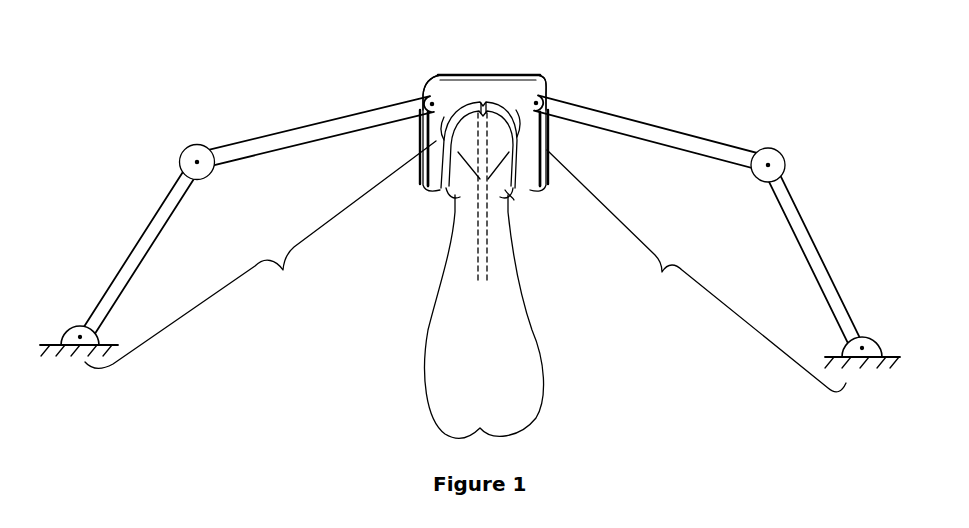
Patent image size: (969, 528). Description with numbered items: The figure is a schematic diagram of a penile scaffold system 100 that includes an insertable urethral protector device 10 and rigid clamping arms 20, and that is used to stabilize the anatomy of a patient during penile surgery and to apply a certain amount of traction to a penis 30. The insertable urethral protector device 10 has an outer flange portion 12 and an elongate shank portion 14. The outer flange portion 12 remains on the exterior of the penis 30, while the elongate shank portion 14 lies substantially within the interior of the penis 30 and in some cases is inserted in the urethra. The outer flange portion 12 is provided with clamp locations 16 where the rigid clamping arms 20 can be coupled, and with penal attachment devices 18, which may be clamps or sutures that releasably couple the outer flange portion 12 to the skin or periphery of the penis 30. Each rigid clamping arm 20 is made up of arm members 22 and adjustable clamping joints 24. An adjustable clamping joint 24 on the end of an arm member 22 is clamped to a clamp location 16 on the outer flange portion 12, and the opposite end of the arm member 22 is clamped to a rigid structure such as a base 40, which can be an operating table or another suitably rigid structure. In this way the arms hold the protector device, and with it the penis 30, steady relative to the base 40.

The penile scaffold system 100 is at (750, 84).
The insertable urethral protector device 10 is at (520, 56).
The outer flange portion 12 is at (448, 74).
The elongate shank portion 14 is at (477, 258).
The clamp location 16 is at (422, 94).
The penal attachment device 18 is at (509, 200).
The rigid clamping arm 20 is at (465, 266).
The arm member 22 is at (324, 122).
The adjustable clamping joint 24 is at (181, 147).
The penis 30 is at (522, 285).
The base 40 is at (108, 344).